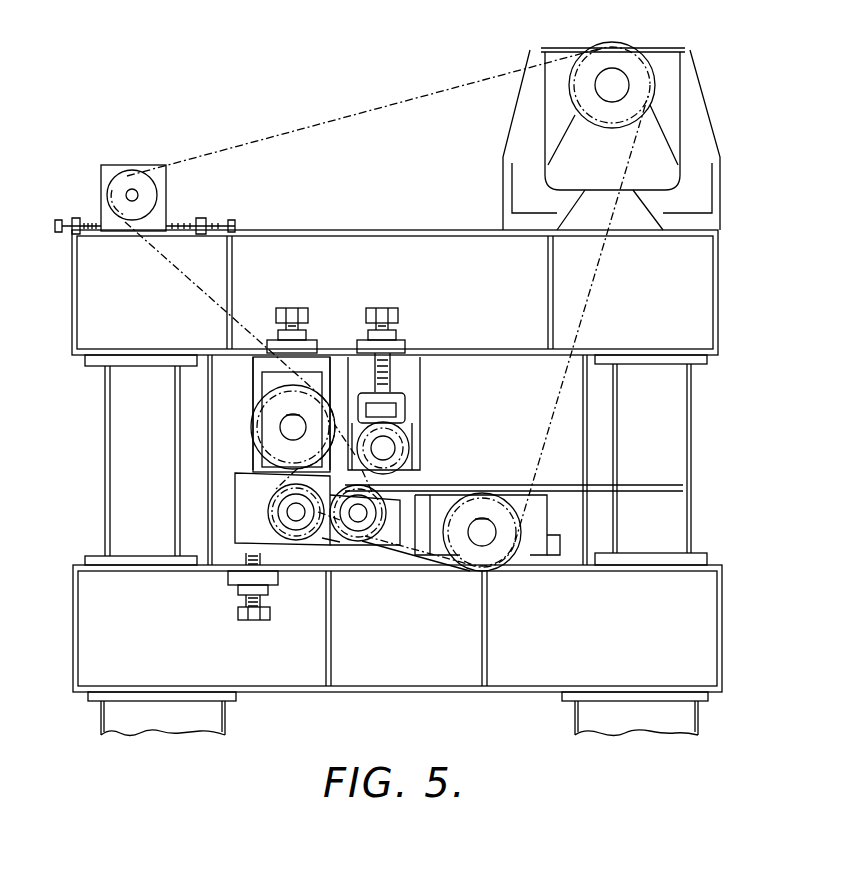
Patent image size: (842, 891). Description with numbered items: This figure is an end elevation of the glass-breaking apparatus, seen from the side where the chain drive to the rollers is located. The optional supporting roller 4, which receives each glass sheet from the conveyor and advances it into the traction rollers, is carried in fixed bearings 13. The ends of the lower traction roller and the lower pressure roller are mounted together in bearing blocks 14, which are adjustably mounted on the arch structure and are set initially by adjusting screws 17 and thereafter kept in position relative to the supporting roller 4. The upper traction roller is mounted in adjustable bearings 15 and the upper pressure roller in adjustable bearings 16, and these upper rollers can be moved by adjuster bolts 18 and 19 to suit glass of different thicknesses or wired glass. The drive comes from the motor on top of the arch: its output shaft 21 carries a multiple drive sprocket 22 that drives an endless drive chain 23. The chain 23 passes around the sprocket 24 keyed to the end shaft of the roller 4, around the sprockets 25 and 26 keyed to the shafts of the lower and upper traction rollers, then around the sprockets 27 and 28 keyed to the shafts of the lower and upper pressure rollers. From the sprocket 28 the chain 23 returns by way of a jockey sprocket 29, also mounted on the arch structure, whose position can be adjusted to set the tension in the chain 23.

The supporting roller 4 is at (478, 536).
The fixed bearings 13 is at (528, 556).
The bearing blocks 14 is at (240, 482).
The adjustable bearings 15 is at (405, 410).
The adjustable bearings 16 is at (325, 372).
The adjusting screws 17 is at (243, 603).
The adjuster bolt 18 is at (386, 308).
The adjuster bolt 19 is at (292, 308).
The output shaft 21 is at (612, 76).
The multiple drive sprocket 22 is at (636, 50).
The endless drive chain 23 is at (172, 268).
The sprocket 24 is at (495, 552).
The sprocket 25 is at (363, 530).
The sprocket 26 is at (396, 446).
The sprocket 27 is at (286, 514).
The sprocket 28 is at (280, 427).
The jockey sprocket 29 is at (129, 214).